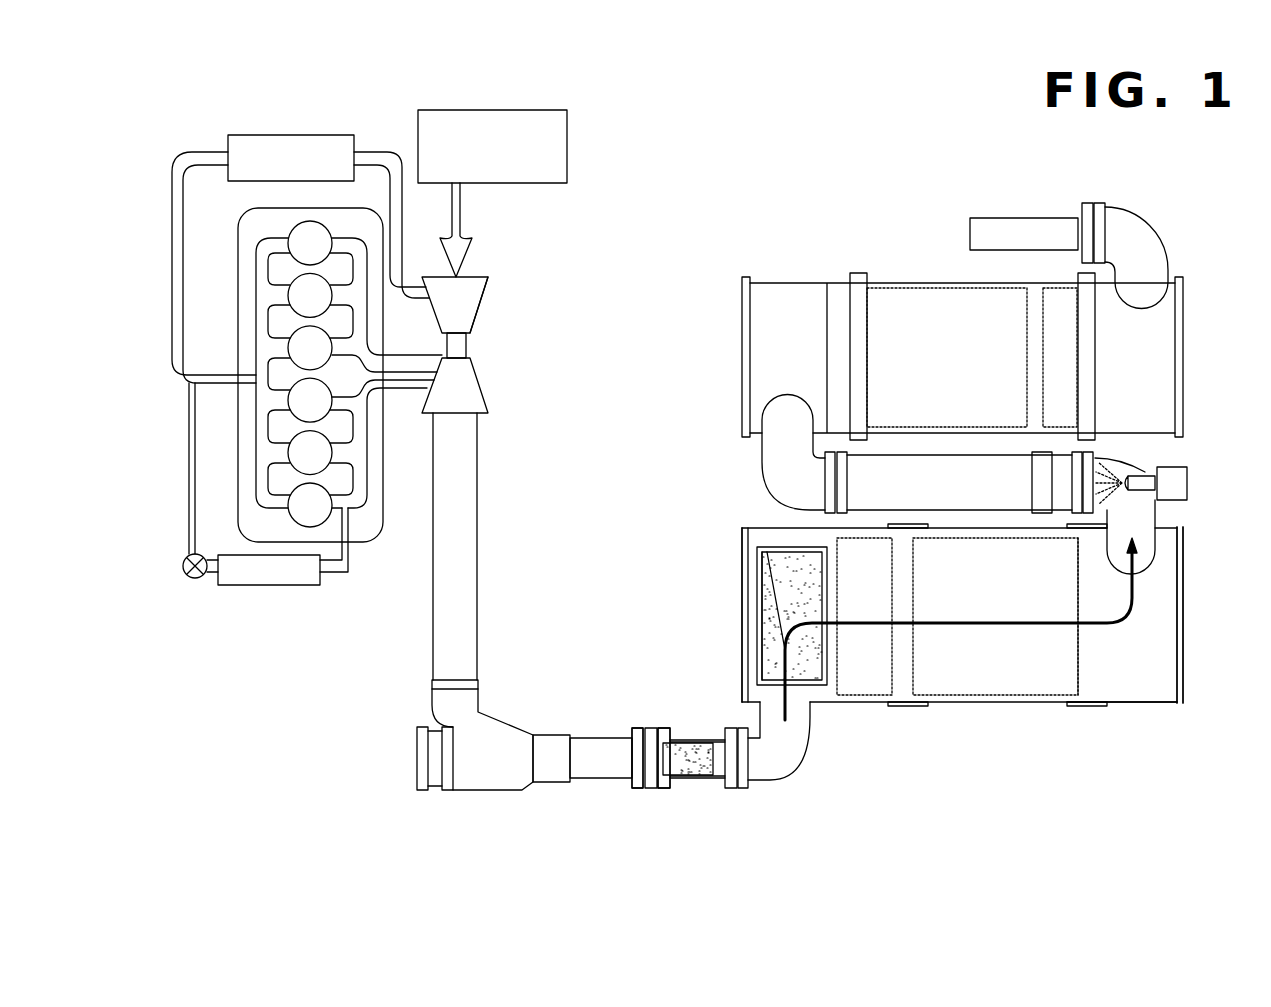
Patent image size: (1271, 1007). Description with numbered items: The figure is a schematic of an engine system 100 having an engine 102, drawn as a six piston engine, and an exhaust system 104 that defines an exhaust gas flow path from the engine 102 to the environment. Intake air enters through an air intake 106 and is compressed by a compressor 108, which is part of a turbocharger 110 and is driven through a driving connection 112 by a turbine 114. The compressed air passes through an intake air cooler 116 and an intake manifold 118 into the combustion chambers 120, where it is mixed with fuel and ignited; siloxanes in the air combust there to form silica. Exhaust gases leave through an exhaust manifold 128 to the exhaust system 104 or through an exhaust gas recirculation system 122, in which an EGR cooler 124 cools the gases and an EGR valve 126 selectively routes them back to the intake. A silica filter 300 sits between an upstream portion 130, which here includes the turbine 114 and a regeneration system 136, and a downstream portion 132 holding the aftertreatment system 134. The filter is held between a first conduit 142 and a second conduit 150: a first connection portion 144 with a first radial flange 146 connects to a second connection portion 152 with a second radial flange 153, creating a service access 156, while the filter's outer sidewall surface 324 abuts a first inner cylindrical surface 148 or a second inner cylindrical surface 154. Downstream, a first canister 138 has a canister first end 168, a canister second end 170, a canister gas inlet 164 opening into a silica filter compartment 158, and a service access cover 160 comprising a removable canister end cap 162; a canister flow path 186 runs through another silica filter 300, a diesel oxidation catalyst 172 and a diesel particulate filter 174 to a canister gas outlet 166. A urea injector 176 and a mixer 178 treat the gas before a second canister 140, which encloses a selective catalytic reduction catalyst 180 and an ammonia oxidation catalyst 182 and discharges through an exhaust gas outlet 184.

The engine system 100 is at (806, 124).
The engine 102 is at (377, 542).
The exhaust system 104 is at (630, 490).
The air intake 106 is at (492, 193).
The compressor 108 is at (455, 305).
The turbocharger 110 is at (478, 315).
The driving connection 112 is at (467, 347).
The turbine 114 is at (455, 385).
The intake air cooler 116 is at (300, 259).
The intake manifold 118 is at (262, 297).
The combustion chambers 120 is at (297, 333).
The exhaust gas recirculation (EGR) system 122 is at (190, 418).
The EGR cooler 124 is at (283, 546).
The EGR valve 126 is at (195, 578).
The exhaust manifold 128 is at (360, 452).
The upstream portion 130 is at (586, 642).
The downstream portion 132 is at (1053, 765).
The aftertreatment system 134 is at (826, 818).
The regeneration system 136 is at (475, 735).
The first canister 138 is at (1162, 655).
The second canister 140 is at (1157, 388).
The first conduit 142 is at (601, 758).
The first connection portion 144 is at (632, 790).
The first radial flange 146 is at (633, 730).
The first inner cylindrical surface 148 is at (580, 735).
The second conduit 150 is at (762, 752).
The second connection portion 152 is at (660, 790).
The second radial flange 153 is at (662, 730).
The second inner cylindrical surface 154 is at (750, 783).
The service access 156 is at (743, 583).
The silica filter compartment 158 is at (877, 663).
The service access cover 160 is at (743, 622).
The canister end cap 162 is at (743, 660).
The canister gas inlet 164 is at (822, 722).
The canister gas outlet 166 is at (1218, 520).
The canister first end 168 is at (743, 537).
The canister second end 170 is at (1182, 585).
The diesel oxidation catalyst (DOC) 172 is at (928, 687).
The diesel particulate filter (DPF) 174 is at (1050, 663).
The urea injector 176 is at (1188, 468).
The mixer 178 is at (959, 482).
The selective catalytic reduction catalyst (SCR) 180 is at (972, 357).
The ammonia oxidation catalyst (AMOX) 182 is at (1062, 320).
The exhaust gas outlet 184 is at (1037, 233).
The canister flow path 186 is at (1130, 700).
The silica filter 300 is at (705, 775).
The outer sidewall surface 324 is at (690, 742).